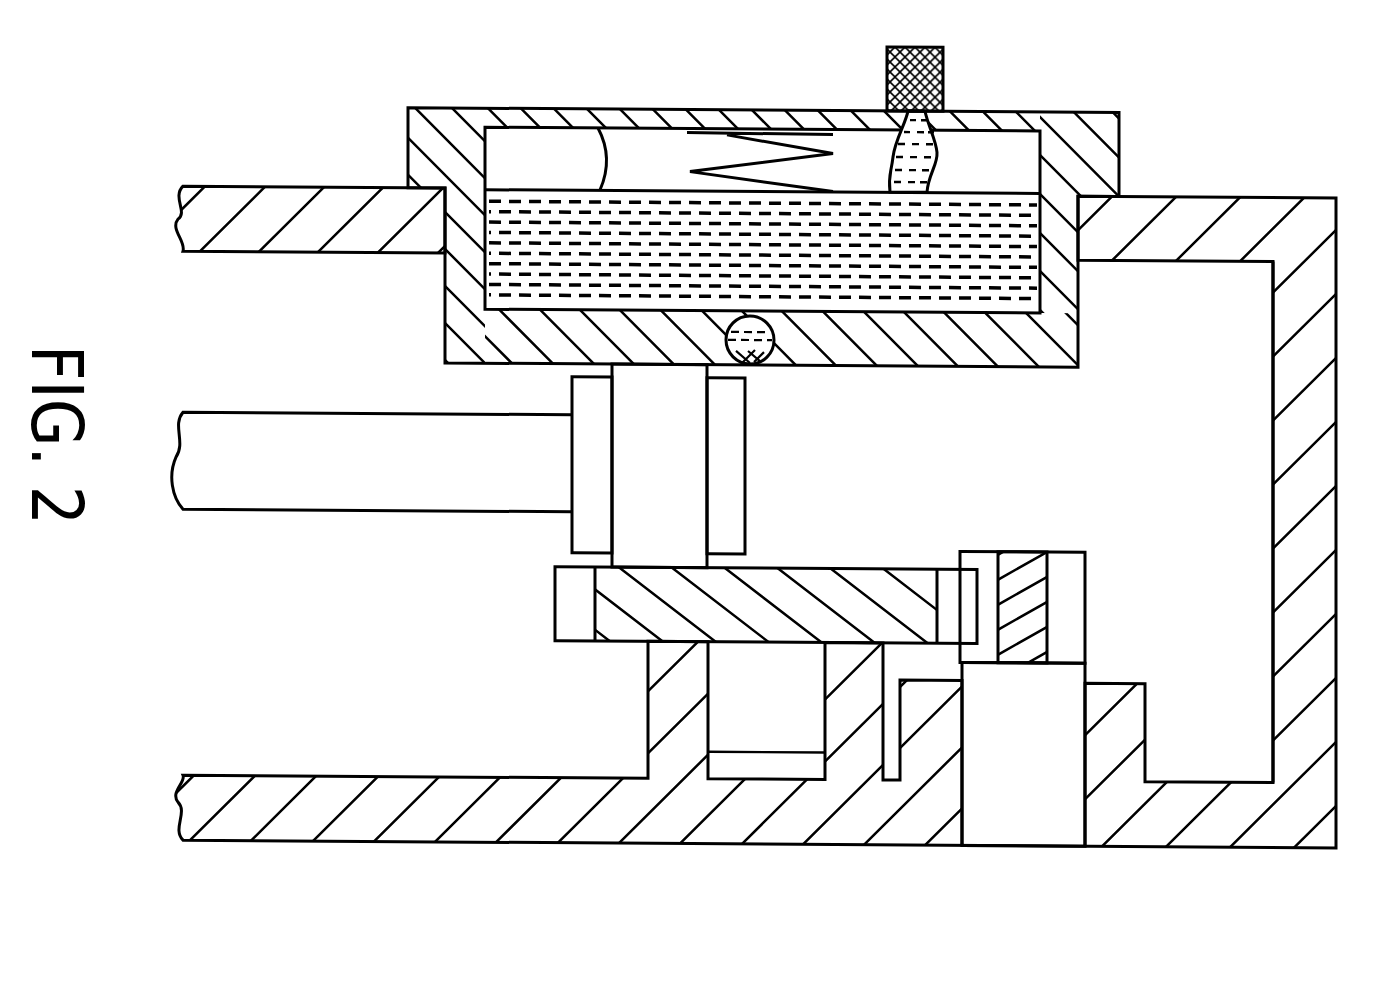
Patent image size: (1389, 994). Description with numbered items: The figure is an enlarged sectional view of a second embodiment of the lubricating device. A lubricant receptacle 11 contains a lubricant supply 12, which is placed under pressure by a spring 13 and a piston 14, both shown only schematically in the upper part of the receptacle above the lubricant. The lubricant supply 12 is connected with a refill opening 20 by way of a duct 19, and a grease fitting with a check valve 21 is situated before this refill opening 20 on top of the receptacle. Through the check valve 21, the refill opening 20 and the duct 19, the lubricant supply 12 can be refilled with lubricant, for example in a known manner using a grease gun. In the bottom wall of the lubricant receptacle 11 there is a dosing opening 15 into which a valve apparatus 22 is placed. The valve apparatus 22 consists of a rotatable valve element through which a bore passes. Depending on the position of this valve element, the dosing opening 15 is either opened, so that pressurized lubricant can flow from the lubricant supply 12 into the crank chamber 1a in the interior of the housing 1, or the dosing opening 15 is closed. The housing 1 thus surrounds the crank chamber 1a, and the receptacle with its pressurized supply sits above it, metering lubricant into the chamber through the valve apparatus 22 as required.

The housing 1 is at (1307, 388).
The crank chamber 1a is at (1240, 347).
The lubricant receptacle 11 is at (1085, 129).
The lubricant supply 12 is at (1000, 207).
The spring 13 is at (762, 132).
The piston 14 is at (587, 108).
The dosing opening 15 is at (755, 365).
The duct 19 is at (893, 153).
The refill opening 20 is at (935, 125).
The check valve 21 is at (942, 65).
The valve apparatus 22 is at (755, 365).